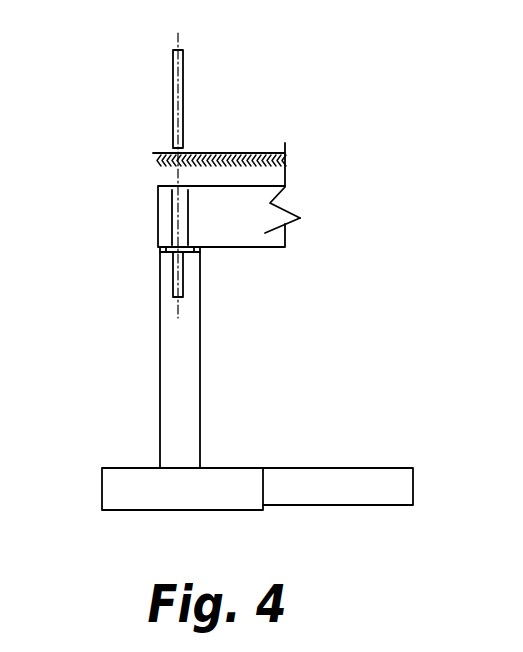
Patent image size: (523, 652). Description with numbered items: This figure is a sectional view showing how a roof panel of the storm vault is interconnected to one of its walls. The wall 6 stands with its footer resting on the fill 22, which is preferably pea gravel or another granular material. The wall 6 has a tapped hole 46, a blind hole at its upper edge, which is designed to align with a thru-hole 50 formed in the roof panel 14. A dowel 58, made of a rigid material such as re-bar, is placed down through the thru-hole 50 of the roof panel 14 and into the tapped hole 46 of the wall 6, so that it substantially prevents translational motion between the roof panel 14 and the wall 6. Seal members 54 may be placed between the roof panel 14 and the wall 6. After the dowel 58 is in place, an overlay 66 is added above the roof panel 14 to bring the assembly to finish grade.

The dowel 58 is at (173, 80).
The overlay 66 is at (257, 153).
The roof panel 14 is at (270, 228).
The thru-hole 50 is at (188, 228).
The seal members 54 is at (158, 252).
The tapped hole 46 is at (175, 292).
The wall 6 is at (187, 395).
The fill 22 is at (363, 478).